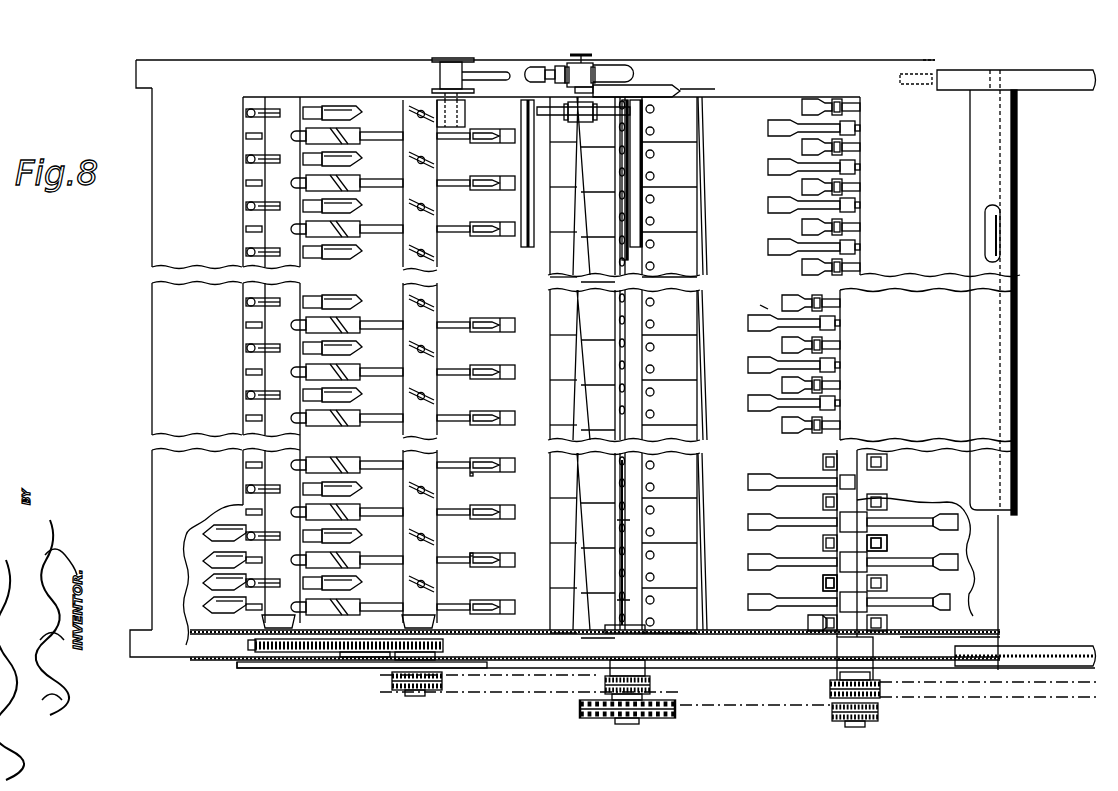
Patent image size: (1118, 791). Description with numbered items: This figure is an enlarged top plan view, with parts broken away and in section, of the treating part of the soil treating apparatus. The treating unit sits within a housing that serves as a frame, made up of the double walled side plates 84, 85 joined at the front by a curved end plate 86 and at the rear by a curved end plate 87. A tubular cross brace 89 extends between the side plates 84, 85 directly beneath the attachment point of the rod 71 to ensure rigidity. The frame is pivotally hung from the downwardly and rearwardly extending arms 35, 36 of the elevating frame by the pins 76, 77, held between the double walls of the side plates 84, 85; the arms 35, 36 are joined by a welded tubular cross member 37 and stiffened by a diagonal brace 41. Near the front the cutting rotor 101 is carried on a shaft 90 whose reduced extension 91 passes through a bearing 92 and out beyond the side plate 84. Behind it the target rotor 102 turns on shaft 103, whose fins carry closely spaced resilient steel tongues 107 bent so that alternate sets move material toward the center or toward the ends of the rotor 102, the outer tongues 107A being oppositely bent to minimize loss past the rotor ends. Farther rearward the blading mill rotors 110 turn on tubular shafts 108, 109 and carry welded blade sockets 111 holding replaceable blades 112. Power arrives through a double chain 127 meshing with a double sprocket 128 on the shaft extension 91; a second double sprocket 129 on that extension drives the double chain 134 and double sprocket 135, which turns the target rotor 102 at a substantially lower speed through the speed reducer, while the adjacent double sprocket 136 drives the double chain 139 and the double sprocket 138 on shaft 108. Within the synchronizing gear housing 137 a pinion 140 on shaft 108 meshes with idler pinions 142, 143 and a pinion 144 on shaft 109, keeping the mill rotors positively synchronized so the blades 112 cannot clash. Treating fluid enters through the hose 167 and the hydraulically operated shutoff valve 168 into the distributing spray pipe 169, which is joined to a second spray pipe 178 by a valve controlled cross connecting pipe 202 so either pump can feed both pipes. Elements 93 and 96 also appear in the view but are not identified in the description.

The arm 35 is at (1050, 646).
The arm 36 is at (1052, 90).
The tubular cross member 37 is at (1004, 390).
The diagonal brace 41 is at (1008, 243).
The rod 71 is at (490, 71).
The pin 76 is at (919, 632).
The pin 77 is at (917, 62).
The side plate 84 is at (126, 629).
The side plate 85 is at (136, 70).
The curved end plate 86 is at (877, 128).
The curved end plate 87 is at (161, 244).
The tubular cross brace 89 is at (467, 113).
The shaft 90 is at (824, 592).
The shaft extension 91 is at (832, 676).
The bearing 92 is at (830, 654).
The clamp bracket 93 is at (883, 537).
The pusher rod 96 is at (814, 418).
The cutting rotor 101 is at (760, 292).
The target rotor 102 is at (704, 462).
The shaft 103 is at (638, 522).
The resilient steel tongues 107 is at (560, 362).
The outer tongues 107A is at (698, 154).
The tubular shaft 108 is at (438, 450).
The tubular shaft 109 is at (302, 450).
The blading mill rotors 110 is at (344, 282).
The blade sockets 111 is at (450, 476).
The replaceable blades 112 is at (480, 548).
The double chain 127 is at (976, 702).
The double sprocket 128 is at (879, 698).
The double sprocket 129 is at (836, 720).
The double chain 134 is at (750, 714).
The double sprocket 135 is at (658, 718).
The double sprocket 136 is at (664, 686).
The synchronizing gear housing 137 is at (260, 668).
The double sprocket 138 is at (384, 694).
The double chain 139 is at (506, 690).
The pinion 140 is at (444, 645).
The idler pinion 142 is at (362, 658).
The idler pinion 143 is at (314, 654).
The pinion 144 is at (244, 656).
The hose 167 is at (630, 68).
The hydraulically operated shutoff valve 168 is at (554, 66).
The distributing spray pipe 169 is at (522, 248).
The distributing spray pipe 178 is at (638, 200).
The cross connecting pipe 202 is at (585, 53).